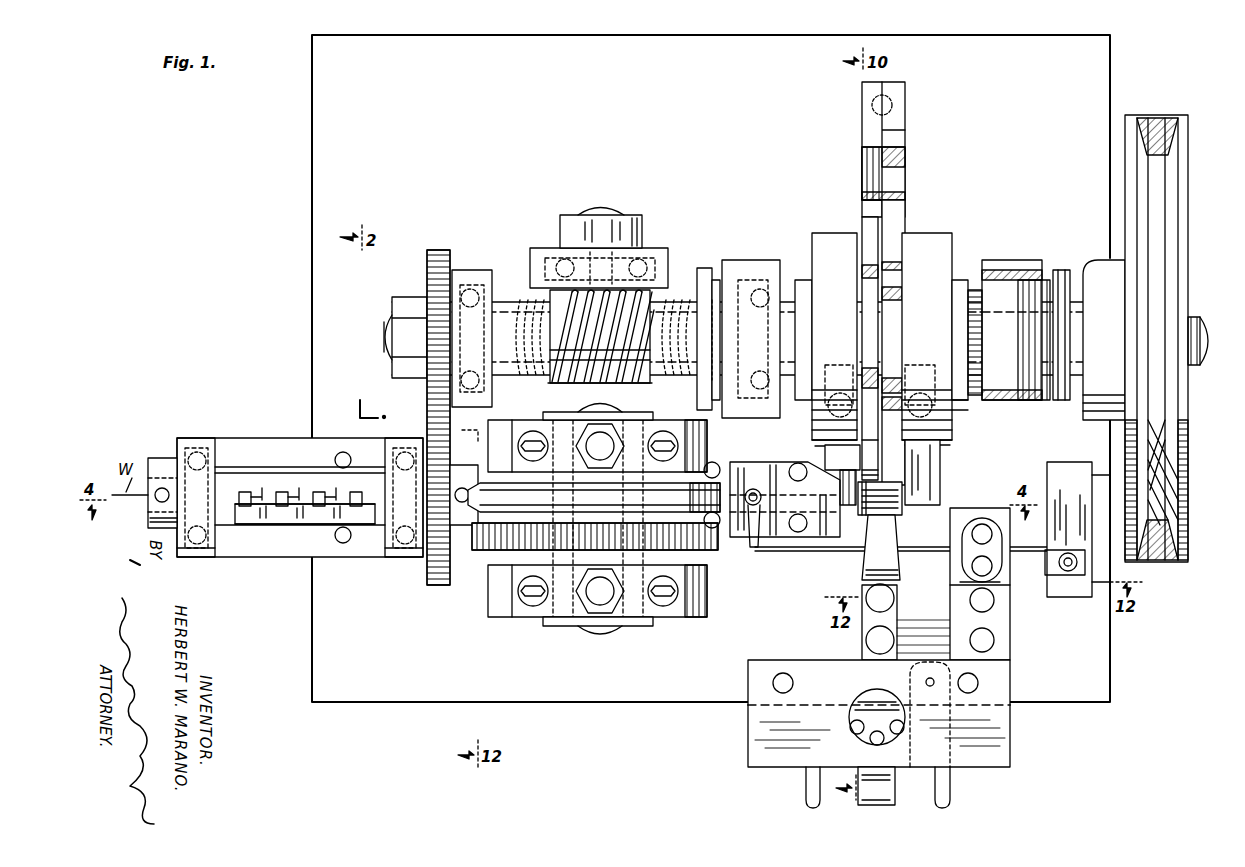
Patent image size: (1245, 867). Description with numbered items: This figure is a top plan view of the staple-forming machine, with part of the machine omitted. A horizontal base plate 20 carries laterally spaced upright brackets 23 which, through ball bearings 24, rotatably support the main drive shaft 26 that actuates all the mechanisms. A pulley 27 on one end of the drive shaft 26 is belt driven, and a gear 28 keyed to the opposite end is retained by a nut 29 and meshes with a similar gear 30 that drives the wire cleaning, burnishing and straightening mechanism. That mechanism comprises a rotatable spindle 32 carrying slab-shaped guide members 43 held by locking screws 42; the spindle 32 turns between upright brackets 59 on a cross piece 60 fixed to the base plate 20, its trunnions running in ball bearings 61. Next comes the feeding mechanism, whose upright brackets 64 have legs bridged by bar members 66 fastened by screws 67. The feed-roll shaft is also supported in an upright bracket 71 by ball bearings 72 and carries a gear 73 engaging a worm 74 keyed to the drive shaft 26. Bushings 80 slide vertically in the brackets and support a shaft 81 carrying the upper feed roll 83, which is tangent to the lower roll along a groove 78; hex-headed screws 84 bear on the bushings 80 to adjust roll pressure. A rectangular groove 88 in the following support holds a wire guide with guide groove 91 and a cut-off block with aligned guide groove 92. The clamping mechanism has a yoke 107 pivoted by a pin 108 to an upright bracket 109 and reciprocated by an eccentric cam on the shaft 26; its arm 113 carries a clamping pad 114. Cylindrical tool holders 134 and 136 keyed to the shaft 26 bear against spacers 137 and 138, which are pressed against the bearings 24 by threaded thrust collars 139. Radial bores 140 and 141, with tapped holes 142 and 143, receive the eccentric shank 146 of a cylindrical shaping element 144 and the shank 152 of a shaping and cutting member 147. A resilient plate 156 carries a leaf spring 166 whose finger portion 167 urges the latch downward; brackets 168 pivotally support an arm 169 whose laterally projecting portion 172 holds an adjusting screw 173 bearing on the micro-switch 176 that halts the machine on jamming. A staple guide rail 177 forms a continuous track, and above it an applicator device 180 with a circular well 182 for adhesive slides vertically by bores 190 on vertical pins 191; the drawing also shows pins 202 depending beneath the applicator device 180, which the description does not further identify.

The base plate 20 is at (385, 702).
The upright brackets 23 is at (470, 270).
The ball bearings 24 is at (490, 300).
The main drive shaft 26 is at (700, 300).
The pulley 27 is at (1190, 148).
The gear 28 is at (797, 416).
The nut 29 is at (406, 297).
The gear 30 is at (437, 585).
The rotatable spindle 32 is at (246, 462).
The locking screws 42 is at (320, 518).
The guide members 43 is at (322, 492).
The upright brackets 59 is at (200, 438).
The cross piece 60 is at (300, 496).
The ball bearings 61 is at (198, 557).
The upright brackets 64 is at (598, 522).
The bar member 66 is at (663, 424).
The screws 67 is at (680, 445).
The upright bracket 71 is at (558, 252).
The ball bearings 72 is at (545, 268).
The gear 73 is at (520, 330).
The worm 74 is at (552, 380).
The groove 78 is at (475, 538).
The bushings 80 is at (648, 412).
The shaft 81 is at (598, 636).
The feed roll 83 is at (490, 483).
The screws 84 is at (600, 518).
The longitudinal rectangular groove 88 is at (757, 542).
The guide groove 91 is at (750, 462).
The guide groove 92 is at (806, 540).
The yoke 107 is at (902, 212).
The pin 108 is at (862, 165).
The upright bracket 109 is at (860, 107).
The arm 113 is at (895, 475).
The clamping pad 114 is at (862, 512).
The tool holder 134 is at (836, 240).
The tool holder 136 is at (928, 240).
The spacer 137 is at (806, 333).
The spacer 138 is at (960, 326).
The threaded thrust collars 139 is at (704, 268).
The radial bore 140 is at (818, 425).
The radial bore 141 is at (920, 380).
The tapped hole 142 is at (832, 455).
The tapped hole 143 is at (948, 438).
The cylindrical shaping element 144 is at (942, 470).
The eccentric shank 146 is at (945, 408).
The shaping and cutting member 147 is at (825, 470).
The shank 152 is at (846, 363).
The resilient plate 156 is at (1010, 610).
The leaf spring 166 is at (862, 630).
The finger portion 167 is at (870, 562).
The brackets 168 is at (960, 566).
The arm 169 is at (940, 547).
The laterally projecting portion 172 is at (1050, 566).
The adjusting screw 173 is at (1069, 573).
The micro-switch 176 is at (1078, 529).
The staple guide rail 177 is at (895, 788).
The applicator device 180 is at (873, 727).
The circular well 182 is at (880, 690).
The bores 190 is at (795, 662).
The vertical pins 191 is at (774, 684).
The pin 202 is at (806, 792).